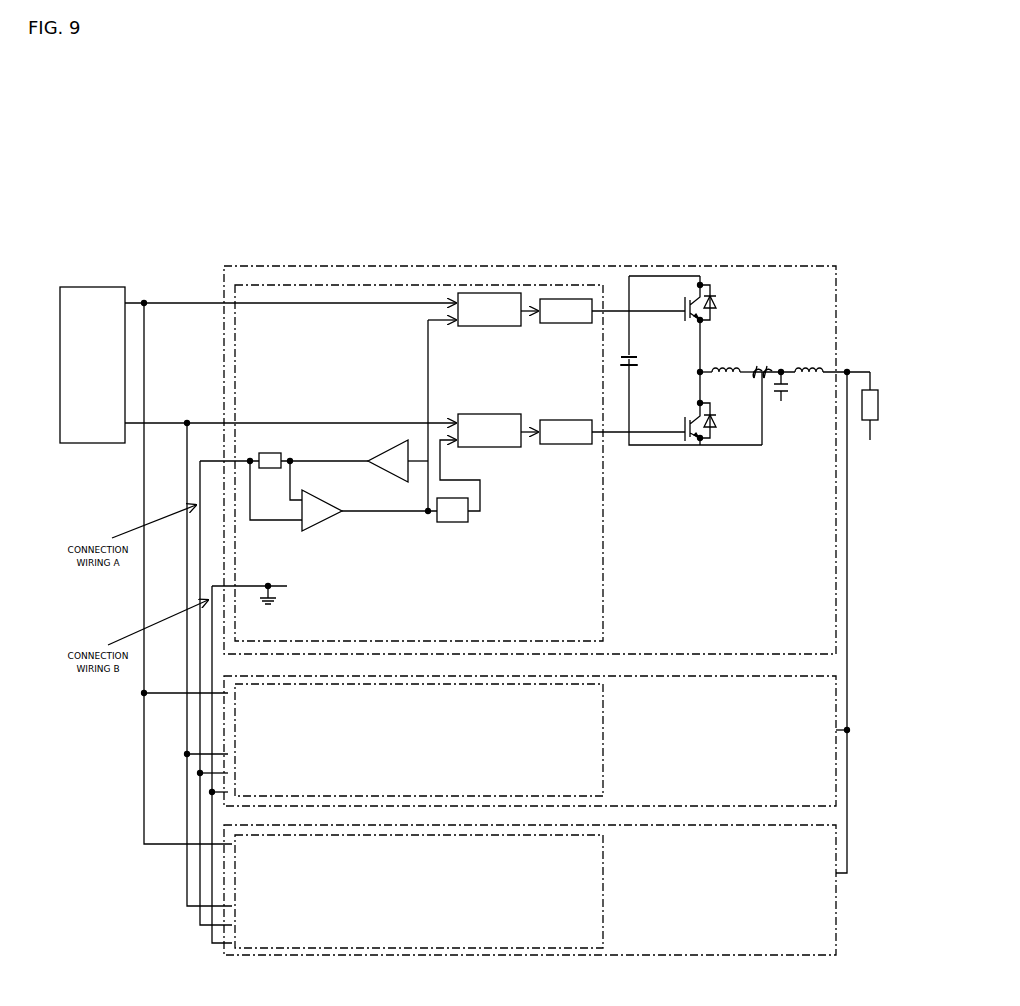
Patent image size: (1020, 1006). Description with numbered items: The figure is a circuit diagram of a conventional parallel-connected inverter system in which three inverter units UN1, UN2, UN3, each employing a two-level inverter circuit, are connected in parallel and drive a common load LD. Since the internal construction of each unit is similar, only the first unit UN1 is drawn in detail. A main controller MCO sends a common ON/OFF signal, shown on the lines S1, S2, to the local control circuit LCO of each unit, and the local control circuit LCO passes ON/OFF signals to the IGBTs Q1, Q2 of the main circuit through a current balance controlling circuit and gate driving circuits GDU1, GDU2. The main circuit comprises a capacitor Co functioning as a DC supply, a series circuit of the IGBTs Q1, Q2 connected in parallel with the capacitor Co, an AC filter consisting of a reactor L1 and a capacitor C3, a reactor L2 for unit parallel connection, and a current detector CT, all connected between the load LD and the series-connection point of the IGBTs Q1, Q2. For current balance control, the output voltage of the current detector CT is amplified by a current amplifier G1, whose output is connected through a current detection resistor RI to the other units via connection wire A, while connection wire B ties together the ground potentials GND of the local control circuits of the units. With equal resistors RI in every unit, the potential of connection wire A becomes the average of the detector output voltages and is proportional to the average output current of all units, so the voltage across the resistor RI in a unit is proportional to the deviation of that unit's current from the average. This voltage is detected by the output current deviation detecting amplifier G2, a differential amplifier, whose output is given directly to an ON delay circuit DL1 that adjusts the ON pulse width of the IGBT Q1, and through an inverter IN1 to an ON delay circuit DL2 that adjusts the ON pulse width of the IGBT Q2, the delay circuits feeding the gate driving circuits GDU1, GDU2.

The main controller MCO is at (80, 292).
The first signal line S1 is at (277, 570).
The second signal line S2 is at (277, 661).
The inverter unit UN1 is at (834, 326).
The inverter unit UN2 is at (838, 782).
The inverter unit UN3 is at (836, 920).
The local control circuit LCO is at (603, 598).
The ON delay circuit DL1 is at (498, 320).
The ON delay circuit DL2 is at (498, 422).
The gate drive unit 1 GDU1 is at (612, 311).
The gate drive unit 2 GDU2 is at (612, 432).
The IGBT Q1 is at (709, 301).
The IGBT Q2 is at (709, 425).
The capacitor Co is at (643, 356).
The reactor L1 is at (726, 361).
The current detector CT is at (774, 397).
The reactor L2 is at (832, 361).
The capacitor C3 is at (790, 388).
The load LD is at (878, 406).
The current detection resistor RI is at (284, 453).
The current amplifier G1 is at (398, 457).
The output current deviation detecting amplifier G2 is at (343, 496).
The inverter IN1 is at (454, 428).
The ground potential GND is at (249, 603).